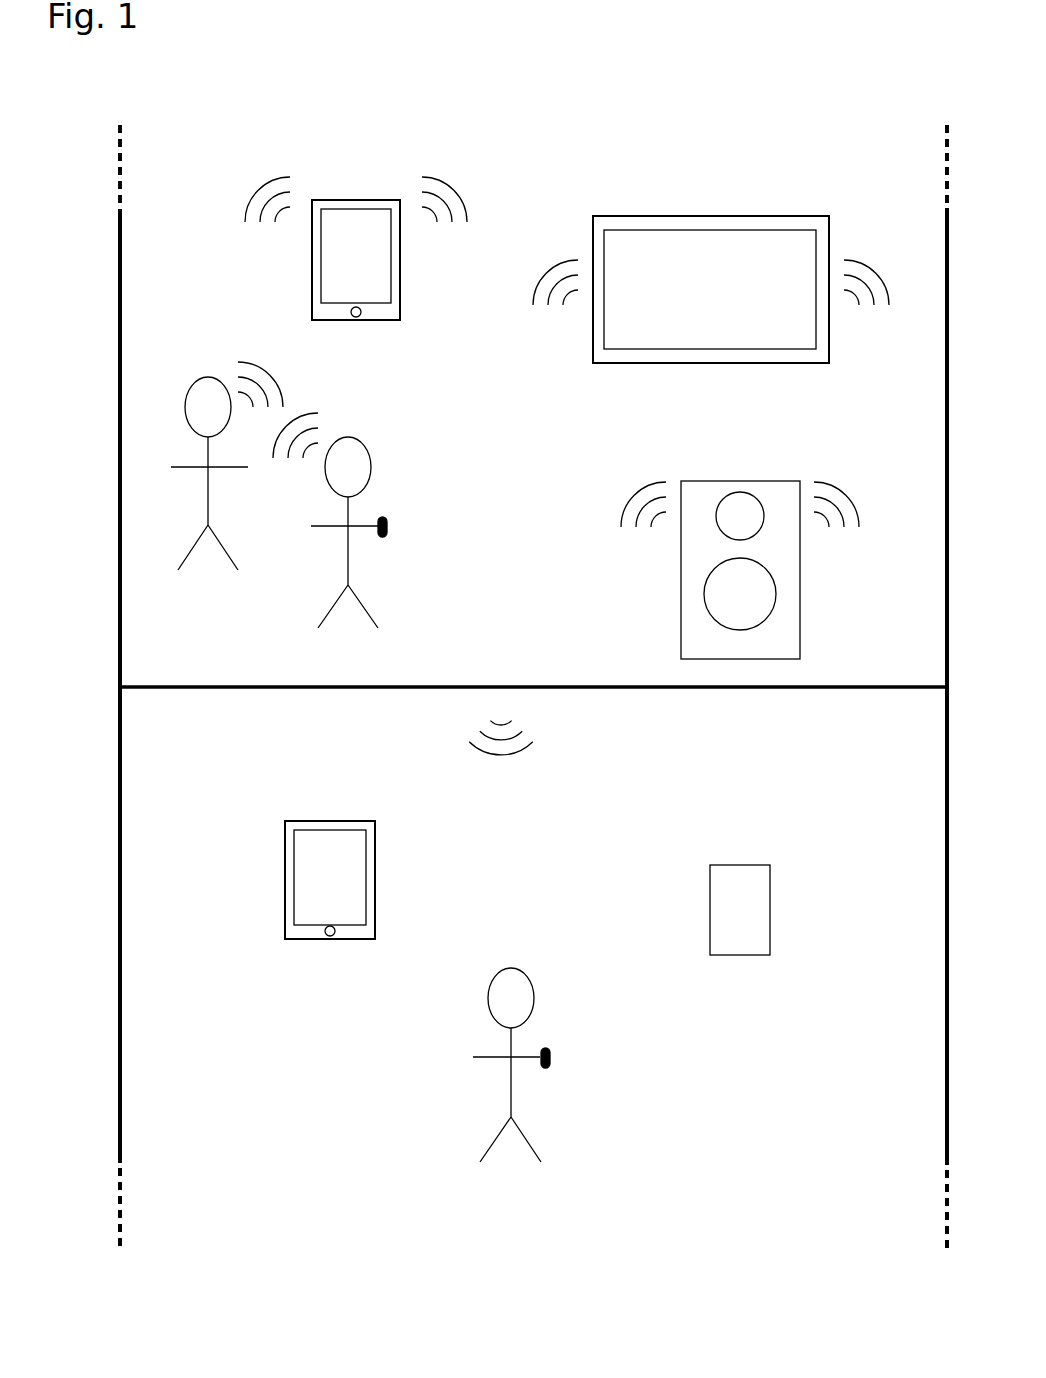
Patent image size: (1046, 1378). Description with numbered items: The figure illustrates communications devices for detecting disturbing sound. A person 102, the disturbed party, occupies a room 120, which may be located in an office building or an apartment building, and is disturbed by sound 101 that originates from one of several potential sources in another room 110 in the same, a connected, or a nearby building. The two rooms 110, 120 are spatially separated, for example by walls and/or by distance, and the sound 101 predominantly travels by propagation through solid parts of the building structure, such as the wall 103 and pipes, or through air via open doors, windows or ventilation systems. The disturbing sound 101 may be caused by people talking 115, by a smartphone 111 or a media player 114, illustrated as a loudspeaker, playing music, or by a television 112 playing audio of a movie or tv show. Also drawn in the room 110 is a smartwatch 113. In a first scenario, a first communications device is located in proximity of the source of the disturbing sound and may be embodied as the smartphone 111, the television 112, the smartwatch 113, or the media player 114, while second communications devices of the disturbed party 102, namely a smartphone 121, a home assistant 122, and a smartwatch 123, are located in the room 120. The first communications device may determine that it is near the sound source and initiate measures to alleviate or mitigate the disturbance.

The sound 101 is at (520, 760).
The person 102 is at (531, 977).
The wall 103 is at (445, 687).
The room 110 is at (908, 654).
The smartphone 111 is at (327, 200).
The television 112 is at (621, 216).
The smartwatch 113 is at (385, 513).
The media player 114 is at (708, 481).
The people talking 115 is at (312, 393).
The room 120 is at (908, 744).
The smartphone 121 is at (310, 821).
The home assistant 122 is at (725, 865).
The smartwatch 123 is at (546, 1042).